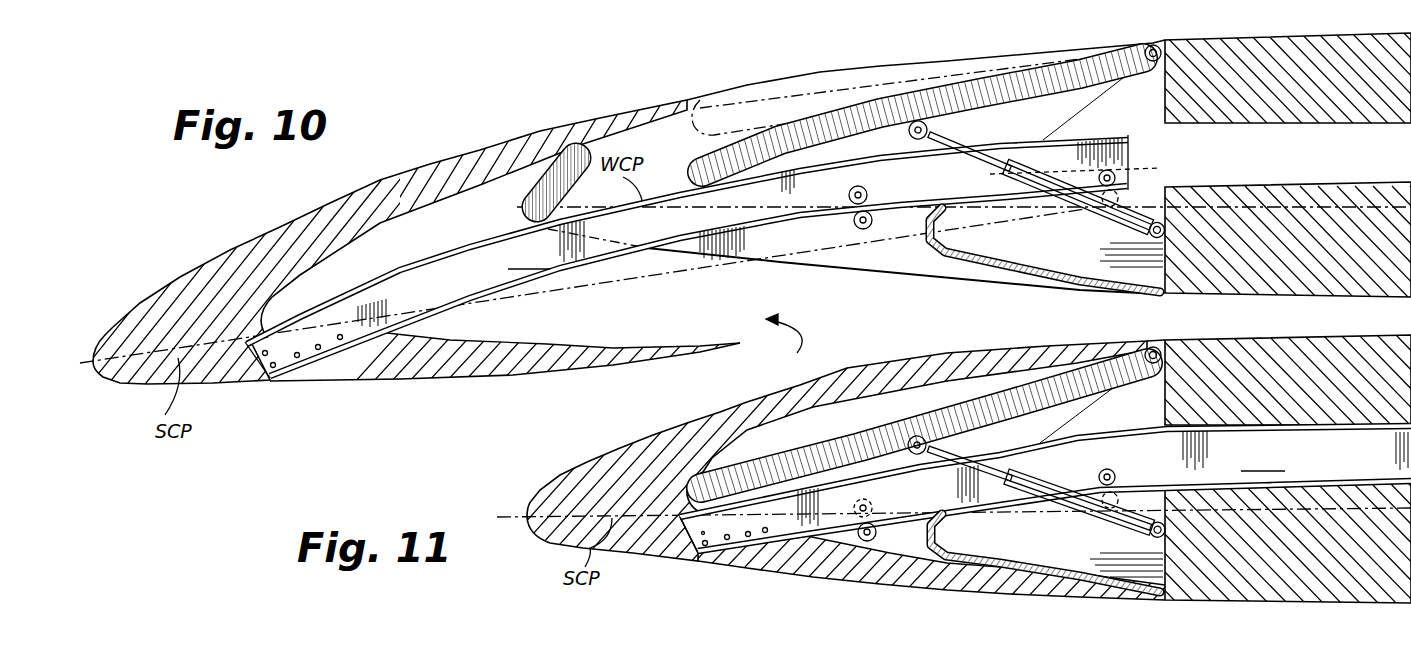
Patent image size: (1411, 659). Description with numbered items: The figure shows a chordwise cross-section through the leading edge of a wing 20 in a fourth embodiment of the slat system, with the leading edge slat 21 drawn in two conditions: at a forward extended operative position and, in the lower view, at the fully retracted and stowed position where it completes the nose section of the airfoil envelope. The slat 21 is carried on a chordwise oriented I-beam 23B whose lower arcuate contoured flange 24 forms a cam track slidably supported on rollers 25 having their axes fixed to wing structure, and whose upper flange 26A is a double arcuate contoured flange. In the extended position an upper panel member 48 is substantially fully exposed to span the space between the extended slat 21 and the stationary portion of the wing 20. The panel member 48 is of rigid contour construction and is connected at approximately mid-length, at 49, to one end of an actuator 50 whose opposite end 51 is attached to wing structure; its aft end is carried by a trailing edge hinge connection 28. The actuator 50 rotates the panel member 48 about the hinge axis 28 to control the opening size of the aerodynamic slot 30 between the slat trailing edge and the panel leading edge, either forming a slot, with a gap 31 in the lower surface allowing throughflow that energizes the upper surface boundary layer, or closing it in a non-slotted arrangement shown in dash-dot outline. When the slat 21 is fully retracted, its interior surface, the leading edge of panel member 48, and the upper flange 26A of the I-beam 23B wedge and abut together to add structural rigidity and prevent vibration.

In FIG. 10, the wing 20 is at (1243, 41).
In FIG. 11, the wing 20 is at (1247, 348).
In FIG. 10, the leading edge slat 21 is at (310, 228).
In FIG. 11, the leading edge slat 21 is at (638, 442).
In FIG. 10, the I-beam 23B is at (697, 217).
In FIG. 11, the I-beam 23B is at (1045, 456).
In FIG. 10, the lower arcuate contoured flange 24 is at (470, 298).
In FIG. 11, the lower arcuate contoured flange 24 is at (937, 509).
In FIG. 10, the rollers 25 is at (853, 214).
In FIG. 11, the rollers 25 is at (878, 531).
In FIG. 10, the upper flange 26A is at (413, 264).
In FIG. 11, the upper flange 26A is at (987, 446).
In FIG. 10, the trailing edge hinge connection 28 is at (1155, 46).
In FIG. 11, the trailing edge hinge connection 28 is at (1152, 348).
In FIG. 10, the aerodynamic slot 30 is at (733, 90).
In FIG. 10, the gap 31 is at (772, 345).
In FIG. 10, the upper panel member 48 is at (803, 124).
In FIG. 11, the upper panel member 48 is at (853, 427).
In FIG. 10, the mid-length connection 49 is at (918, 130).
In FIG. 11, the mid-length connection 49 is at (917, 445).
In FIG. 10, the actuator 50 is at (1036, 136).
In FIG. 11, the actuator 50 is at (1037, 439).
In FIG. 10, the opposite end 51 is at (1157, 230).
In FIG. 11, the opposite end 51 is at (1157, 529).